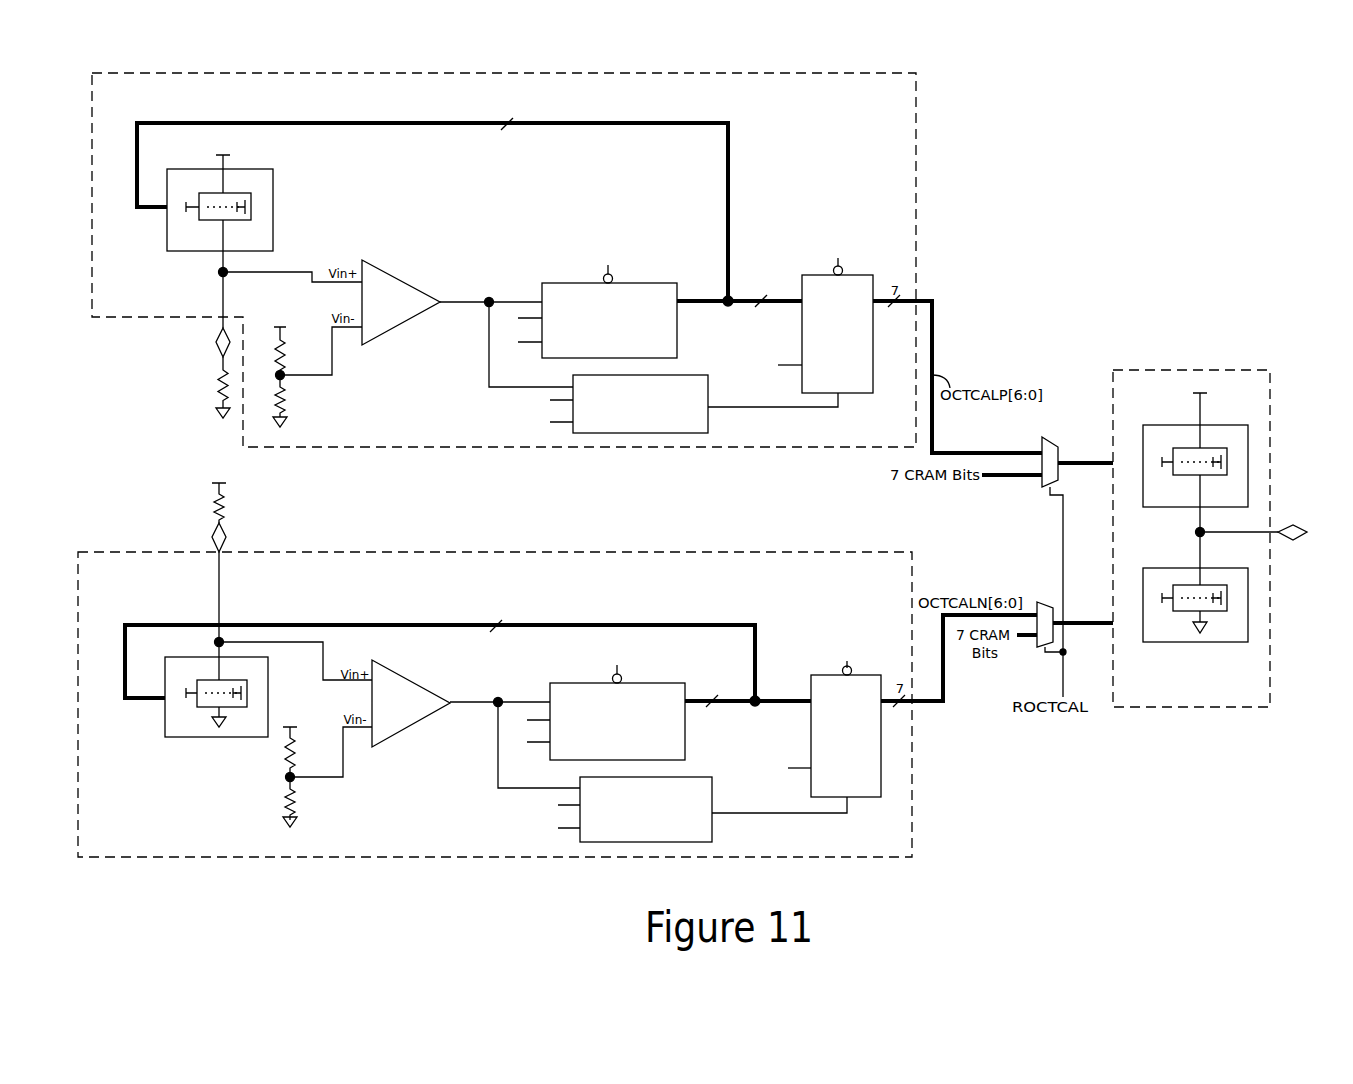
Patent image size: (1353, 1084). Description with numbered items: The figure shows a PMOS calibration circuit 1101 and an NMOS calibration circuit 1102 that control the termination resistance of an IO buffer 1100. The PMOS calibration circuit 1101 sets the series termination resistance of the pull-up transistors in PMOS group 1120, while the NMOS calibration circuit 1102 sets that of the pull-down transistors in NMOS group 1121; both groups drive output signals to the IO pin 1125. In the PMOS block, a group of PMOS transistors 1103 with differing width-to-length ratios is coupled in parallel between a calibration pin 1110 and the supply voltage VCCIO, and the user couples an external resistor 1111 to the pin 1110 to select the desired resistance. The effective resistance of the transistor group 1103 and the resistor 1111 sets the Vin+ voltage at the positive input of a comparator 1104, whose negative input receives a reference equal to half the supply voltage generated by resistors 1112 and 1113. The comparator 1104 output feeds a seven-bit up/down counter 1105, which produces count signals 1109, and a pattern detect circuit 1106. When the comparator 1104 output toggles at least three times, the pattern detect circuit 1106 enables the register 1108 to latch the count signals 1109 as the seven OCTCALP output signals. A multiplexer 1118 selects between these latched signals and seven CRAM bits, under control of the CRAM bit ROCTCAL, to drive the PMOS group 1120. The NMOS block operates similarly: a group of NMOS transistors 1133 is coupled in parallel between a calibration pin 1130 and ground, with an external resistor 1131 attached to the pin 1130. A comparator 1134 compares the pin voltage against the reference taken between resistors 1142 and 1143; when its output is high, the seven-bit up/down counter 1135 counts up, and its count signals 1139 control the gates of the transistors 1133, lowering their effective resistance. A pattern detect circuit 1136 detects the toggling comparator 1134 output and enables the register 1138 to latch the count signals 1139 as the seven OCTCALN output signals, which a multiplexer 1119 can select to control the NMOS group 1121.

The IO buffer 1100 is at (1163, 370).
The PMOS calibration circuit 1101 is at (916, 128).
The NMOS calibration circuit 1102 is at (912, 823).
The PMOS transistor group 1103 is at (273, 196).
The comparator 1104 is at (395, 272).
The 7-bit up/down counter 1105 is at (558, 283).
The pattern detect circuit 1106 is at (705, 375).
The register 1108 is at (808, 275).
The count signals 1109 is at (708, 296).
The calibration pin 1110 is at (216, 338).
The external resistor 1111 is at (216, 393).
The resistor 1112 is at (280, 343).
The resistor 1113 is at (280, 403).
The multiplexer 1118 is at (1052, 440).
The multiplexer 1119 is at (1037, 605).
The PMOS transistor group 1120 is at (1218, 425).
The NMOS transistor group 1121 is at (1213, 570).
The IO pin 1125 is at (1296, 525).
The calibration pin 1130 is at (226, 540).
The external resistor 1131 is at (216, 502).
The NMOS transistor group 1133 is at (165, 722).
The comparator 1134 is at (425, 690).
The 7-bit up/down counter 1135 is at (568, 683).
The pattern detect circuit 1136 is at (712, 777).
The register 1138 is at (815, 675).
The count signals 1139 is at (735, 625).
The resistor 1142 is at (290, 760).
The resistor 1143 is at (290, 803).